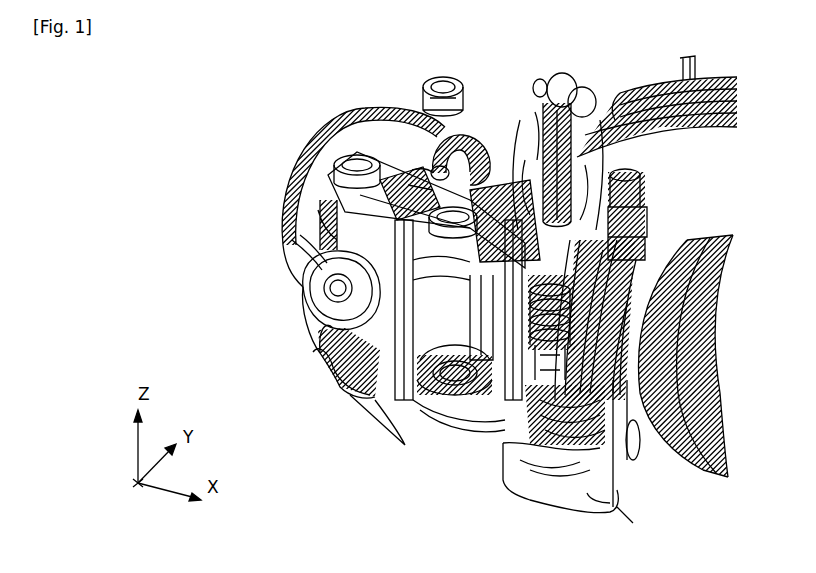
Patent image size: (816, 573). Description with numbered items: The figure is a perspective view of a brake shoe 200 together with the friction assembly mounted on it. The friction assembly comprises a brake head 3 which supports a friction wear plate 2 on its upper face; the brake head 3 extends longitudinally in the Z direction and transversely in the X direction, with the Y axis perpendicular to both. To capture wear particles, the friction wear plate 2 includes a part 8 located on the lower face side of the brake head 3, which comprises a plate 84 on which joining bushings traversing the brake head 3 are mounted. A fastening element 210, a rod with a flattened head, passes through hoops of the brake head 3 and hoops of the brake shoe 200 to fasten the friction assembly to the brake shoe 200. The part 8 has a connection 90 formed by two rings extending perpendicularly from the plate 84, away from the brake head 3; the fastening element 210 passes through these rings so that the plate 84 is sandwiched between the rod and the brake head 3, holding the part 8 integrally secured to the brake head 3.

The friction wear plate 2 is at (633, 443).
The brake head 3 is at (620, 507).
The part 8 is at (565, 358).
The plate 84 is at (413, 397).
The connection 90 is at (578, 304).
The brake shoe 200 is at (432, 222).
The fastening element 210 is at (500, 353).